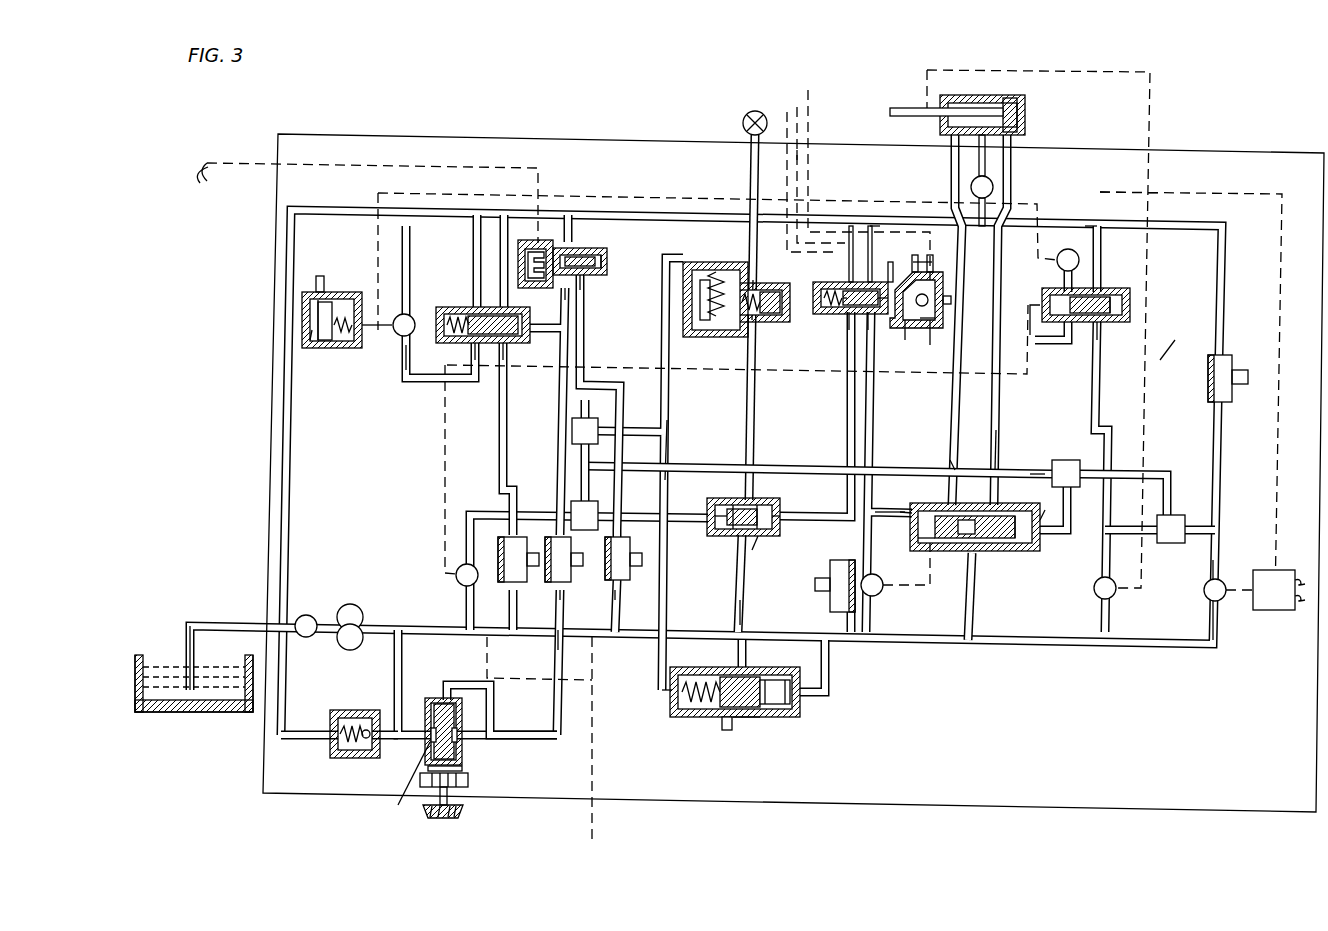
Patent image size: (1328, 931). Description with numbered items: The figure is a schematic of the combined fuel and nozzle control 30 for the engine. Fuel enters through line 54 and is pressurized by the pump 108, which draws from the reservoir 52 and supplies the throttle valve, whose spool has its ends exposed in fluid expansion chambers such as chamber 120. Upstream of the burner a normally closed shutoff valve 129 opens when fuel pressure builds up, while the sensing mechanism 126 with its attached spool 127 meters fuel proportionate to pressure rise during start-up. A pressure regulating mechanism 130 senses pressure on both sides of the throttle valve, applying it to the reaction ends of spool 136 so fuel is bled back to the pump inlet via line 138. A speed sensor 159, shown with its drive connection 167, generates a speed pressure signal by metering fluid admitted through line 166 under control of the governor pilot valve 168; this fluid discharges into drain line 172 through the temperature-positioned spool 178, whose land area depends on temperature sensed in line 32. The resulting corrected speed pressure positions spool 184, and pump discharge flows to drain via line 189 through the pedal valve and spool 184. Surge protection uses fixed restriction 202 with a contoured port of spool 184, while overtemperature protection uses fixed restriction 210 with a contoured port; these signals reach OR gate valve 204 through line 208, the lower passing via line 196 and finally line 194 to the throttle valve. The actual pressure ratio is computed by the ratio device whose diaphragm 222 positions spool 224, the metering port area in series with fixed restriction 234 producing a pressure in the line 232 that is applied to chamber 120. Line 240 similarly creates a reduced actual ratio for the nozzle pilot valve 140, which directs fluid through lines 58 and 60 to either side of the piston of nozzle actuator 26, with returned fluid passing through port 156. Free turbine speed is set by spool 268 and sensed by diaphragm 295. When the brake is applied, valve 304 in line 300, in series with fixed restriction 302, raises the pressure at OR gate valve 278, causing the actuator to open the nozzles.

The combined fuel and nozzle control 30 is at (1258, 150).
The temperature line 32 is at (627, 248).
The drain line 172 is at (605, 214).
The line 189 is at (452, 628).
The brake line 300 is at (1218, 440).
The inlet line 54 is at (192, 626).
The reservoir 52 is at (195, 712).
The pump 108 is at (343, 650).
The line 166 is at (360, 758).
The governor pilot valve 168 is at (462, 760).
The speed sensor 159 is at (422, 818).
The shaft 167 is at (390, 780).
The pressure regulating mechanism 130 is at (820, 712).
The spool 136 is at (727, 730).
The line 138 is at (735, 722).
The nozzle pilot valve 140 is at (688, 717).
The fluid expansion chamber 120 is at (760, 512).
The spool 127 is at (748, 290).
The sensing mechanism 126 is at (712, 337).
The spool 224 is at (828, 314).
The diaphragm 222 is at (915, 270).
The spool 268 is at (1130, 305).
The spool 178 is at (600, 248).
The spool 184 is at (462, 314).
The sensing diaphragm 295 is at (300, 320).
The nozzle actuator 26 is at (1030, 112).
The line 60 is at (1020, 128).
The line 58 is at (935, 124).
The shutoff valve 129 is at (742, 118).
The fixed restriction 202 is at (497, 558).
The fixed restriction 234 is at (826, 590).
The fixed restriction 302 is at (1240, 368).
The OR gate valve 204 is at (585, 418).
The line 194 is at (600, 514).
The port 156 is at (1052, 480).
The OR gate valve 278 is at (1170, 543).
The variable restriction 304 is at (1222, 580).
The line 196 is at (650, 470).
The line 240 is at (870, 440).
The line 232 is at (848, 436).
The line 208 is at (640, 415).
The fixed restriction 210 is at (992, 372).